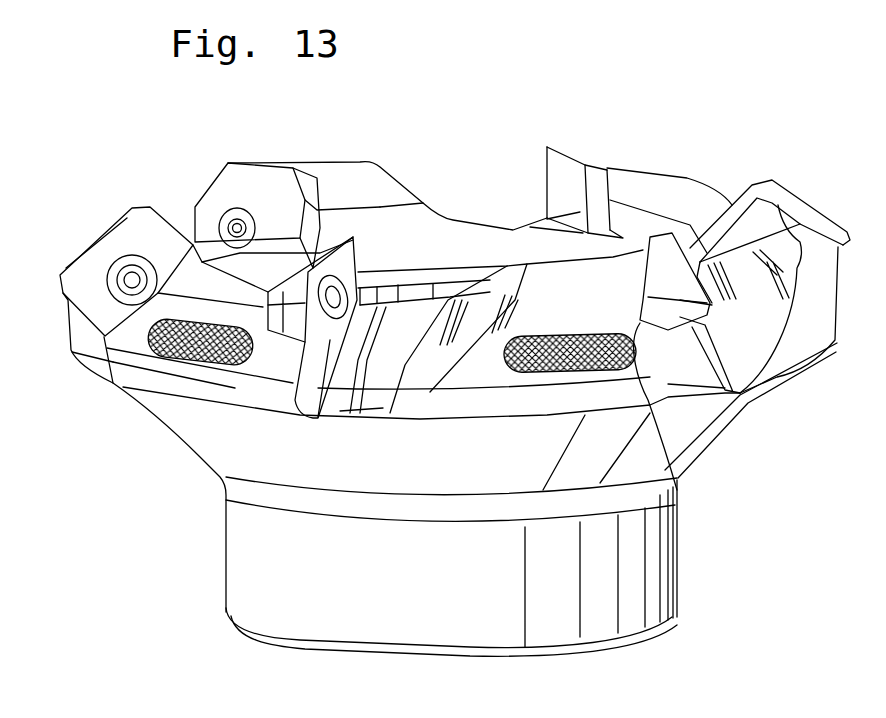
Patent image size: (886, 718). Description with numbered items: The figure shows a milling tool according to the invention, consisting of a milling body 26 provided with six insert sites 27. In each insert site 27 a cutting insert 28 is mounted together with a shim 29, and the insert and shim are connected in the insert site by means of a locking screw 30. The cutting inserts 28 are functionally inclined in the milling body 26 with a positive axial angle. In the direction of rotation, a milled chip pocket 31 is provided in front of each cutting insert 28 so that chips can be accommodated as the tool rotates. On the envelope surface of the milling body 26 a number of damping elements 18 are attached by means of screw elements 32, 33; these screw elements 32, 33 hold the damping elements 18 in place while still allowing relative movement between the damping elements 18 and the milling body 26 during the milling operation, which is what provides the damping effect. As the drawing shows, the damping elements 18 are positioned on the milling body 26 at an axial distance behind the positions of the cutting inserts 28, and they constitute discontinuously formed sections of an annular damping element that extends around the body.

The damping element 18 is at (573, 373).
The milling body 26 is at (127, 445).
The insert site 27 is at (677, 478).
The cutting insert 28 is at (88, 280).
The shim 29 is at (597, 163).
The locking screw 30 is at (133, 277).
The chip pocket 31 is at (797, 270).
The screw element 32 is at (120, 383).
The screw element 33 is at (222, 340).